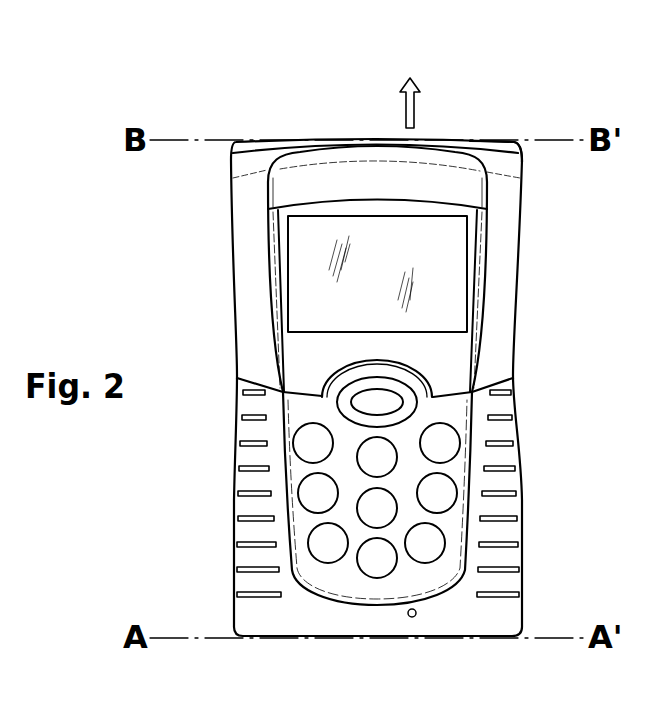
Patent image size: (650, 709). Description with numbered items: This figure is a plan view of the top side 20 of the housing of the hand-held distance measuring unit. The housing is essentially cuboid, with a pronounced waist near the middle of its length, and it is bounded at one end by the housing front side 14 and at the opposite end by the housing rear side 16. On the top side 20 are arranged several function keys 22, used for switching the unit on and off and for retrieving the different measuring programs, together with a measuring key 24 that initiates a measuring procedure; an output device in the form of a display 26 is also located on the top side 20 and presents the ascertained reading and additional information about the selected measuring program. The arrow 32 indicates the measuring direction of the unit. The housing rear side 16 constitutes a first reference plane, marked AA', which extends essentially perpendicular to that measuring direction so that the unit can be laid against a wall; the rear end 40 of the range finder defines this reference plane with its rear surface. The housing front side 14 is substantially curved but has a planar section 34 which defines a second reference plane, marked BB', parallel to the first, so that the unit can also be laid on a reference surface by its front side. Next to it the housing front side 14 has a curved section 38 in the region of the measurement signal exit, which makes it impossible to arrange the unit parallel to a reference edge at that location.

The housing front side 14 is at (348, 110).
The housing rear side 16 is at (415, 639).
The top side 20 is at (498, 228).
The function keys 22 is at (433, 493).
The measuring key 24 is at (386, 406).
The display 26 is at (436, 290).
The arrow 32 is at (415, 110).
The planar section 34 is at (265, 140).
The curved section 38 is at (492, 140).
The rear end 40 is at (480, 615).